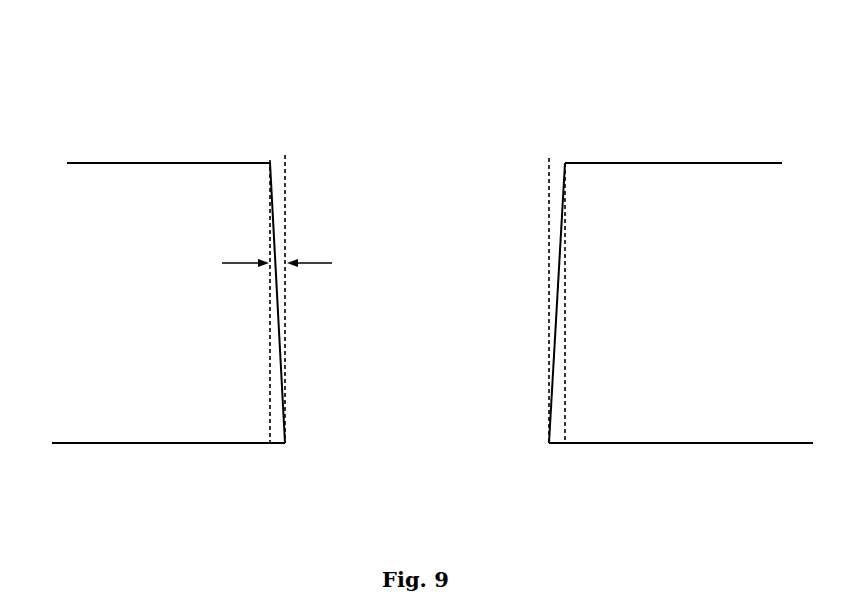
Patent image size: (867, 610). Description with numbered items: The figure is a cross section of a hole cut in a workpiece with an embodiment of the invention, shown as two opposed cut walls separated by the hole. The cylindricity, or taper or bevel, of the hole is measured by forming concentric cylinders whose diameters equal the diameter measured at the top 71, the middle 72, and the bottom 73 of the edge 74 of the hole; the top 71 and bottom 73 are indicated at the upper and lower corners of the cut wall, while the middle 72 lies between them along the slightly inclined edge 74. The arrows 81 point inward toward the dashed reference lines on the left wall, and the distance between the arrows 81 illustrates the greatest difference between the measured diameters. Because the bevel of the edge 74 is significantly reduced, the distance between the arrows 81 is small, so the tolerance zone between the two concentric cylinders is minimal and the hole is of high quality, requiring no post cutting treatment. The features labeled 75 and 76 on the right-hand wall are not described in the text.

The top of the edge of the hole 71 is at (270, 163).
The middle of the edge of the hole 72 is at (268, 323).
The bottom of the edge of the hole 73 is at (285, 443).
The edge of the hole 74 is at (548, 325).
The upper wall of second member 75 is at (719, 156).
The lower wall of second member 76 is at (673, 450).
The arrows 81 is at (263, 255).